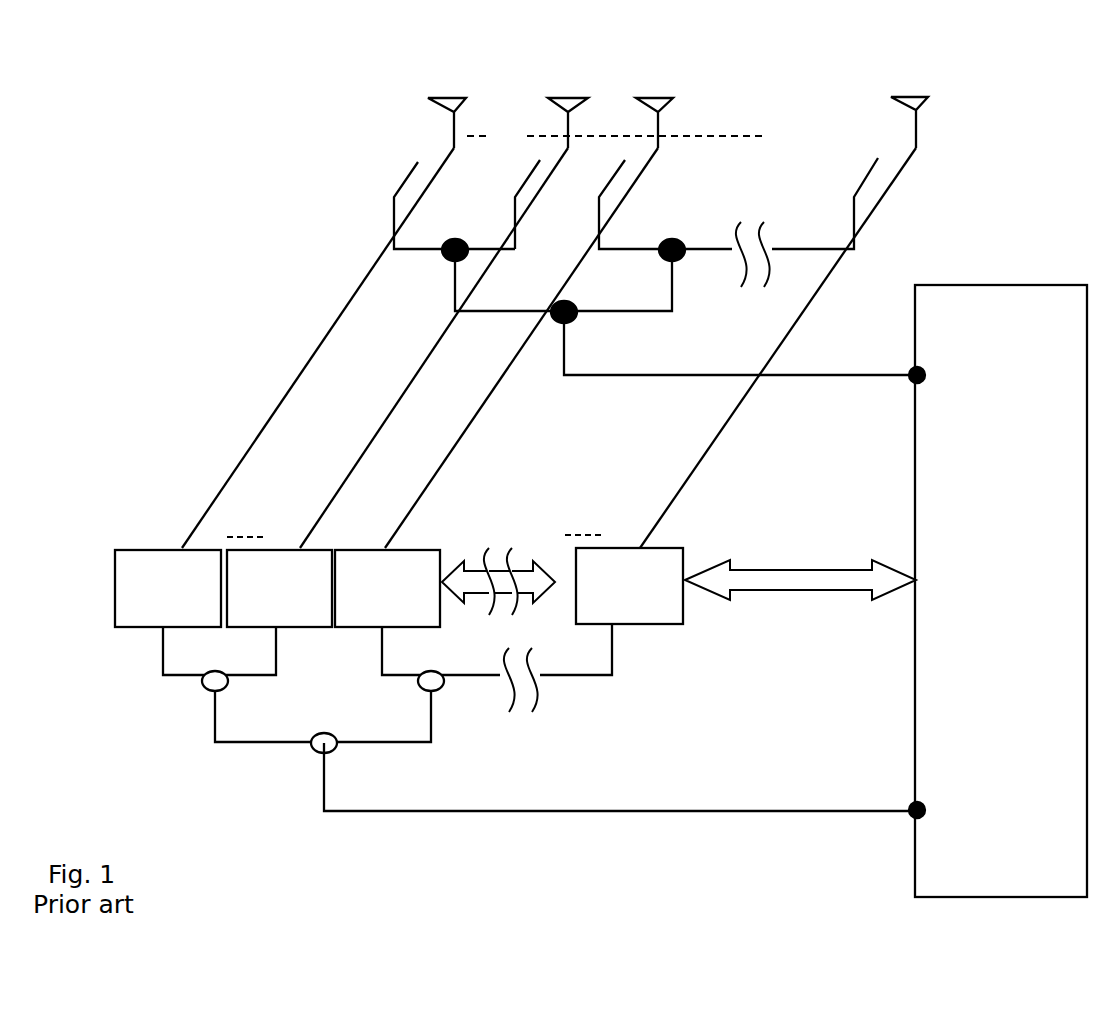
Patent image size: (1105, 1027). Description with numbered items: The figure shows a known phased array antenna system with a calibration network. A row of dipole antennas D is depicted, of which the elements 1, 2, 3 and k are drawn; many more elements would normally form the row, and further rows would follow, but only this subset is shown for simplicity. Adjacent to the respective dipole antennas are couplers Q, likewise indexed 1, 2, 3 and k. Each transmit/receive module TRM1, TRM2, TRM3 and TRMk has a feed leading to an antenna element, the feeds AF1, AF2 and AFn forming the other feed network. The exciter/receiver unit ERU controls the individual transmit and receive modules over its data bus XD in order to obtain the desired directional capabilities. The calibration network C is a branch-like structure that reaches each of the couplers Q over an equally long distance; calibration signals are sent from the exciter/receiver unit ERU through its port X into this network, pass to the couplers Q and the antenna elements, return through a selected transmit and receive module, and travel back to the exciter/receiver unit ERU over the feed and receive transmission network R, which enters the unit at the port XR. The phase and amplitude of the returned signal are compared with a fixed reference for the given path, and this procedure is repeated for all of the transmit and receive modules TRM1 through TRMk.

The dipole antennas D is at (563, 82).
The first antenna element / coupler index 1 is at (448, 150).
The second antenna element / coupler index 2 is at (534, 150).
The third antenna element / coupler index 3 is at (657, 150).
The k-th antenna element / coupler index k is at (784, 300).
The couplers Q is at (542, 232).
The feed AF1 is at (318, 348).
The feed AF2 is at (434, 348).
The feed AFn is at (521, 348).
The T/R module TRM1 is at (168, 588).
The T/R module TRM2 is at (279, 582).
The T/R module TRM3 is at (387, 588).
The T/R module TRMk is at (624, 579).
The exciter/receiver unit ERU is at (1001, 591).
The calibration network C is at (740, 343).
The port X is at (932, 372).
The data bus XD is at (828, 580).
The feed and receive transmission network R is at (620, 777).
The receive port XR is at (940, 809).